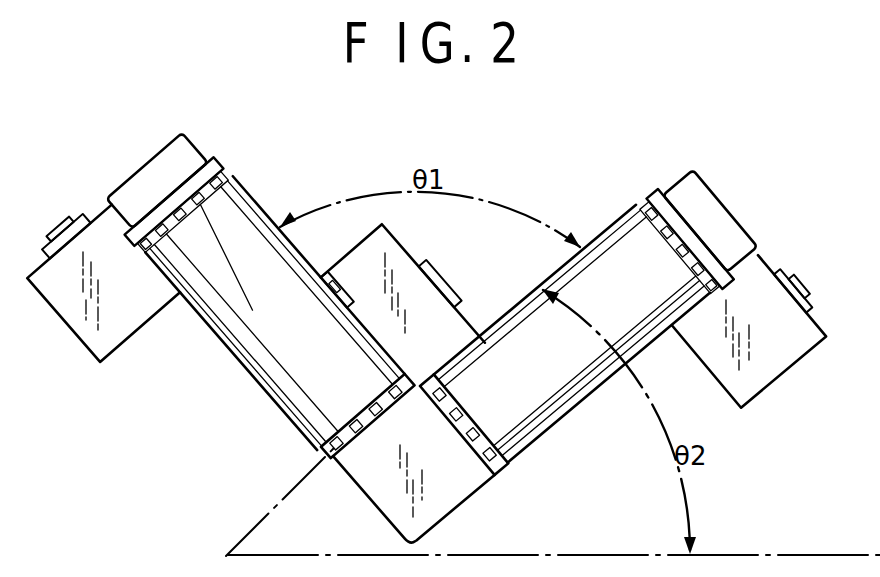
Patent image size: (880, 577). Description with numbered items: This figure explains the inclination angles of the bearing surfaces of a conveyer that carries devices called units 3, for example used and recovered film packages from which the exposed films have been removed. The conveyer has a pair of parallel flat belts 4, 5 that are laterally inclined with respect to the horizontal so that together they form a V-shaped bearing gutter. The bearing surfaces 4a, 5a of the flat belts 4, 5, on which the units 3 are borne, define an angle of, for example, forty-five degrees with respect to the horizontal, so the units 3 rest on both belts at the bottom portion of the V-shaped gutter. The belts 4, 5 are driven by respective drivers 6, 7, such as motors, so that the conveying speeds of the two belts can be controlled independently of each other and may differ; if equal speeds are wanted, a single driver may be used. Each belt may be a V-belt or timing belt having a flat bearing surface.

The unit 3 is at (378, 330).
The flat belt 4 is at (240, 201).
The bearing surface 4a is at (272, 204).
The flat belt 5 is at (610, 242).
The bearing surface 5a is at (540, 259).
The driver 6 is at (80, 322).
The driver 7 is at (777, 357).